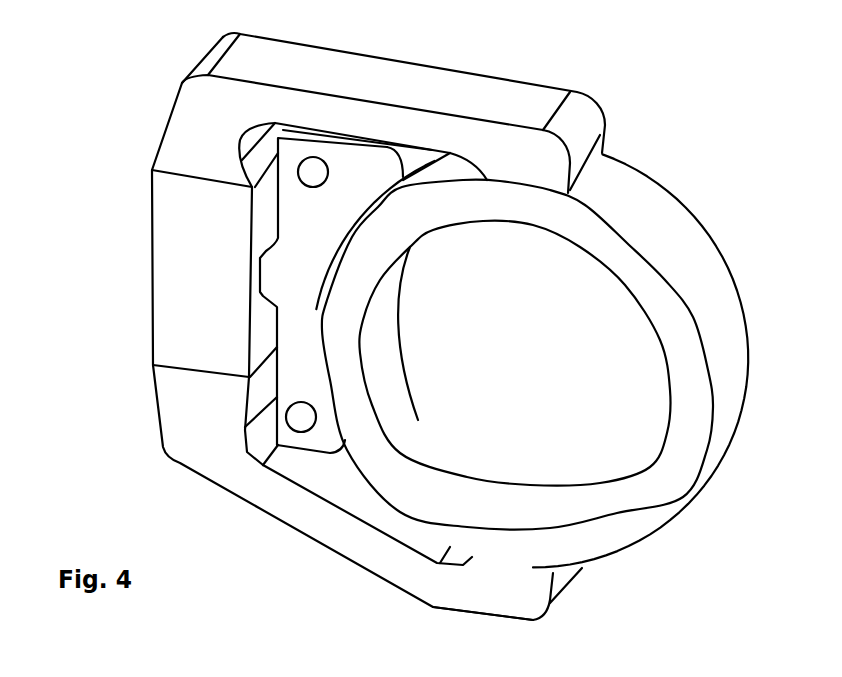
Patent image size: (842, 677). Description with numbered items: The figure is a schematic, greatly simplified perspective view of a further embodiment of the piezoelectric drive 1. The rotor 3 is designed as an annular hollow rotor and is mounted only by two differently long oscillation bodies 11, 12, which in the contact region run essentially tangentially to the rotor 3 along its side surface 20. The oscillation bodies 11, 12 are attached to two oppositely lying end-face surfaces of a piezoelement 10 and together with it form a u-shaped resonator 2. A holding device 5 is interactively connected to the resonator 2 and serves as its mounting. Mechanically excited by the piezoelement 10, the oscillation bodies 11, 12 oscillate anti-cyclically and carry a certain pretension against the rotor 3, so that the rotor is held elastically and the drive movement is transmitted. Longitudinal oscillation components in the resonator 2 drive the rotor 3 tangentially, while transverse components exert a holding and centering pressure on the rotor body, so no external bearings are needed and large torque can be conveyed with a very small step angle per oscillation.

The drive 1 is at (83, 178).
The resonator 2 is at (112, 320).
The rotor 3 is at (650, 512).
The holding device 5 is at (305, 278).
The piezoelement 10 is at (188, 288).
The oscillation body 11 is at (479, 600).
The oscillation body 12 is at (542, 110).
The side surface 20 is at (687, 260).